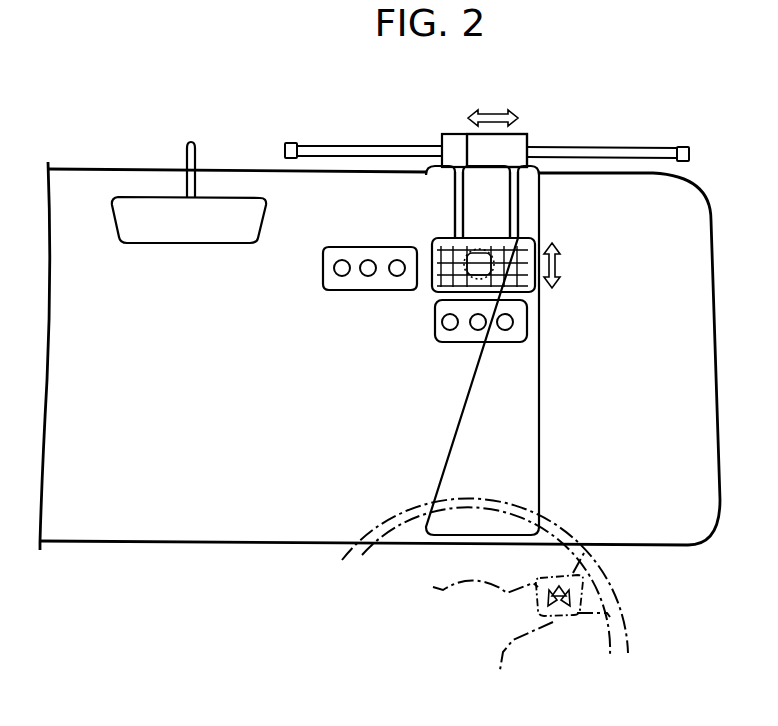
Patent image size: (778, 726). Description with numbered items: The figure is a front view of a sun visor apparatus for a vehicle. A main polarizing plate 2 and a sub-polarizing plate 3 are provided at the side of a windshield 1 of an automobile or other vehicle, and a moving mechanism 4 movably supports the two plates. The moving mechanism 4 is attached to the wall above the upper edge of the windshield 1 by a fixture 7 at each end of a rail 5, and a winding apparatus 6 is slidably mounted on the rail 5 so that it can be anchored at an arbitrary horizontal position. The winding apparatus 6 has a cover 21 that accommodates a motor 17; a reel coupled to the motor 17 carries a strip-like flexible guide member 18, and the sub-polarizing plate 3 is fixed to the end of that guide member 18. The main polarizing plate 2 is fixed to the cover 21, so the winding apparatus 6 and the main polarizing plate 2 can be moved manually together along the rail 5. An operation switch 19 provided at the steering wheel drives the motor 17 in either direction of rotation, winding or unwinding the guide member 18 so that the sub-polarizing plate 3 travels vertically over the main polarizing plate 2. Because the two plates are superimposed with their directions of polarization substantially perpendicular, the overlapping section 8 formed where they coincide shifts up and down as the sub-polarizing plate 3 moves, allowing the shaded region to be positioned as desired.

The windshield 1 is at (322, 527).
The main polarizing plate 2 is at (425, 362).
The sub-polarizing plate 3 is at (539, 300).
The moving mechanism 4 is at (658, 148).
The rail 5 is at (387, 146).
The winding apparatus 6 is at (528, 139).
The fixture 7 is at (291, 143).
The overlapping section 8 is at (432, 291).
The motor 17 is at (450, 134).
The guide member 18 is at (455, 196).
The operation switch 19 is at (559, 622).
The cover 21 is at (518, 135).